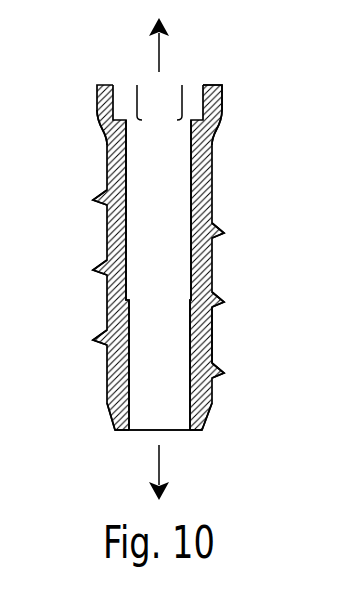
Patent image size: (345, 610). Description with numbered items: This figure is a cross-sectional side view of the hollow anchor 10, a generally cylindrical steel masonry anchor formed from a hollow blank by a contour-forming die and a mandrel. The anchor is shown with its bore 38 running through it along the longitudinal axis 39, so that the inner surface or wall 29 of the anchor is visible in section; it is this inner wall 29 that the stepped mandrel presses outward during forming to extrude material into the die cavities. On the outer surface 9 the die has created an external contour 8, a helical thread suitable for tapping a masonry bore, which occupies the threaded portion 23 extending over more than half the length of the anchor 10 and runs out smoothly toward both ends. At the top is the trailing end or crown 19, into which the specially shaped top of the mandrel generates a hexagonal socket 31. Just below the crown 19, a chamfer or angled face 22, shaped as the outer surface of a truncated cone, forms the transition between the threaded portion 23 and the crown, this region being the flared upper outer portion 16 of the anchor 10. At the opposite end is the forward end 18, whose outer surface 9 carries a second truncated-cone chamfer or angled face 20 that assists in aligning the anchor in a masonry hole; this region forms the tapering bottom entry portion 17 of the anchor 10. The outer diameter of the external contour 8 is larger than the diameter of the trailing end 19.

The hollow anchor 10 is at (215, 205).
The external contour 8 is at (223, 235).
The outer surface 9 is at (211, 328).
The flared upper outer portion 16 is at (215, 132).
The tapering bottom entry portion 17 is at (208, 412).
The forward end 18 is at (193, 433).
The trailing end or crown 19 is at (210, 85).
The chamfer or angled face 20 is at (112, 420).
The chamfer or angled face 22 is at (105, 137).
The threaded portion 23 is at (105, 243).
The inner surface or wall 29 is at (190, 314).
The hexagonal socket 31 is at (193, 97).
The bore 38 is at (150, 413).
The longitudinal axis 39 is at (160, 44).